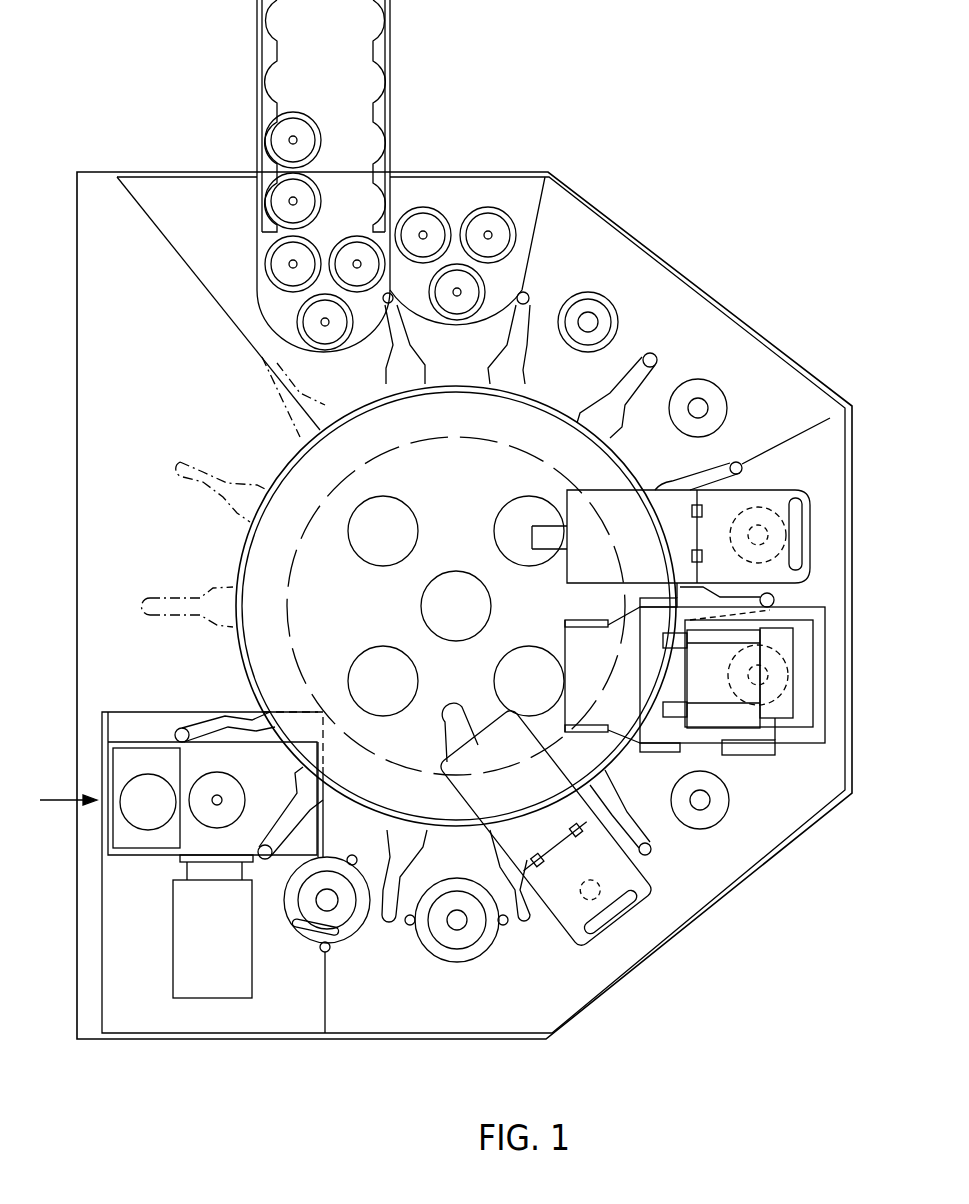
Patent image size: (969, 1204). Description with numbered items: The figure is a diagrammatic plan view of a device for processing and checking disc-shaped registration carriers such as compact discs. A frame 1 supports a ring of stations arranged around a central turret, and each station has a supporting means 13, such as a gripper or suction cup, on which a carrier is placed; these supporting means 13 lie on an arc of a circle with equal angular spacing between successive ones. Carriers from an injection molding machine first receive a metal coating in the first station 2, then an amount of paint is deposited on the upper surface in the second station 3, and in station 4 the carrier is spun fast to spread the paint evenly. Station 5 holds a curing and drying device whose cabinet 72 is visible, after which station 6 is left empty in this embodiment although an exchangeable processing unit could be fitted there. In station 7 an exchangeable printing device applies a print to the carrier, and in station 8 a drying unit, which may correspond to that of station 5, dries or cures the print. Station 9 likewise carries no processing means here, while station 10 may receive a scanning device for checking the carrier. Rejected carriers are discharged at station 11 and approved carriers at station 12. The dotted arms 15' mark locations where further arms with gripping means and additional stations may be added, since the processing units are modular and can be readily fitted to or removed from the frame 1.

The frame 1 is at (783, 830).
The first station 2 is at (193, 849).
The second station 3 is at (301, 981).
The station 4 is at (424, 992).
The station 5 is at (618, 964).
The station 6 is at (732, 861).
The station 7 is at (841, 720).
The station 8 is at (826, 478).
The station 9 is at (751, 371).
The station 10 is at (632, 269).
The station 11 is at (483, 150).
The station 12 is at (232, 243).
The supporting means 13 is at (712, 800).
The arms 15' is at (234, 492).
The cabinet 72 is at (654, 885).